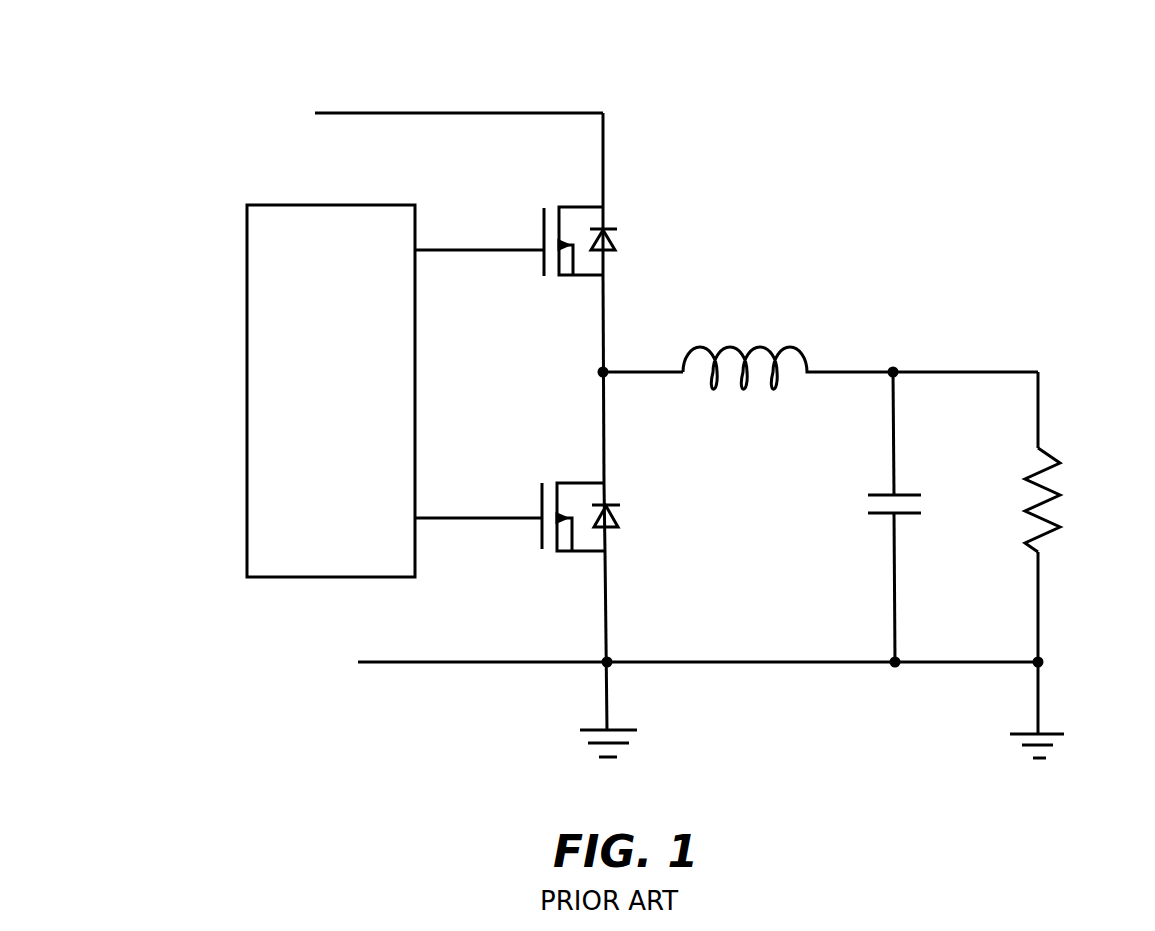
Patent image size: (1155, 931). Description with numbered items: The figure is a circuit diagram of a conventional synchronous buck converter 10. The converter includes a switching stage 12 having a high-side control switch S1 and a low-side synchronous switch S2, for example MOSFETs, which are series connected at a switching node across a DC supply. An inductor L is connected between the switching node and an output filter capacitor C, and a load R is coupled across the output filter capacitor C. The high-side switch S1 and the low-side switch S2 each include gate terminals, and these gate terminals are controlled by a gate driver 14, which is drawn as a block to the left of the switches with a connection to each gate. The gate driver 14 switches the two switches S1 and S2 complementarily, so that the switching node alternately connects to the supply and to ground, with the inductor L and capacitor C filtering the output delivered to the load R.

The synchronous buck converter 10 is at (812, 196).
The switching stage 12 is at (482, 109).
The gate driver 14 is at (354, 456).
The high-side switch S1 is at (606, 241).
The low-side switch S2 is at (607, 517).
The inductor L is at (751, 349).
The output filter capacitor C is at (877, 517).
The load R is at (1072, 517).